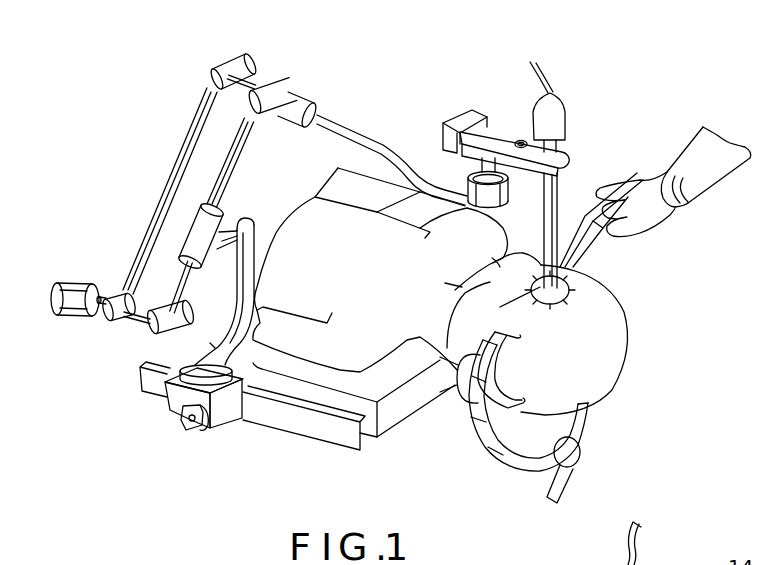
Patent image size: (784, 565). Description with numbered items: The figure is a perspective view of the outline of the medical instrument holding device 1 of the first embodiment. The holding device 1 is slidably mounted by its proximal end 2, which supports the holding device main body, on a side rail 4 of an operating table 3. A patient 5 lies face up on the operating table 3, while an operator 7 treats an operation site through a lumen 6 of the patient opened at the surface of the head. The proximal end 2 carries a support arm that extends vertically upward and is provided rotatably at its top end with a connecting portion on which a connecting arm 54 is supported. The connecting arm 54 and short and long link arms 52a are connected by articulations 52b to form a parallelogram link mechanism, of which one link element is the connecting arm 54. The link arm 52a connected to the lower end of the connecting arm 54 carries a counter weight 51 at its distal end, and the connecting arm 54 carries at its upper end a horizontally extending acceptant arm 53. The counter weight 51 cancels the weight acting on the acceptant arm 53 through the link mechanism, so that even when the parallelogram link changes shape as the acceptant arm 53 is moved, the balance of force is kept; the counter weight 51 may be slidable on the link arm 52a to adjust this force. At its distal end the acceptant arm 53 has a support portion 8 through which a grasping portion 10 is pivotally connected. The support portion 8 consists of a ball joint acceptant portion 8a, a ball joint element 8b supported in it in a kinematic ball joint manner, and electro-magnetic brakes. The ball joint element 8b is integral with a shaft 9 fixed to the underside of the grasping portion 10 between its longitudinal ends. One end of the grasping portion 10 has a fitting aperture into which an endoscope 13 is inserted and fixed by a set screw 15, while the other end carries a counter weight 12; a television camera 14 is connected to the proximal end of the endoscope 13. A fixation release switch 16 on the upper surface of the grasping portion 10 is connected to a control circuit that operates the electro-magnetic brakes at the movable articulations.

The medical instrument holding device 1 is at (252, 198).
The proximal end 2 is at (160, 427).
The operating table 3 is at (405, 409).
The side rail 4 is at (296, 420).
The patient 5 is at (614, 363).
The lumen 6 is at (592, 260).
The operator 7 is at (707, 190).
The support portion 8 is at (396, 275).
The ball joint acceptant portion 8a is at (468, 208).
The ball joint element 8b is at (377, 212).
The shaft 9 is at (500, 111).
The grasping portion 10 is at (497, 133).
The counter weight 12 is at (467, 117).
The endoscope 13 is at (560, 225).
The television camera 14 is at (553, 109).
The set screw 15 is at (560, 200).
The fixation release switch 16 is at (519, 140).
The counter weight 51 is at (55, 320).
The link arms 52a is at (146, 240).
The articulations 52b is at (300, 80).
The acceptant arm 53 is at (346, 122).
The connecting arm 54 is at (240, 138).